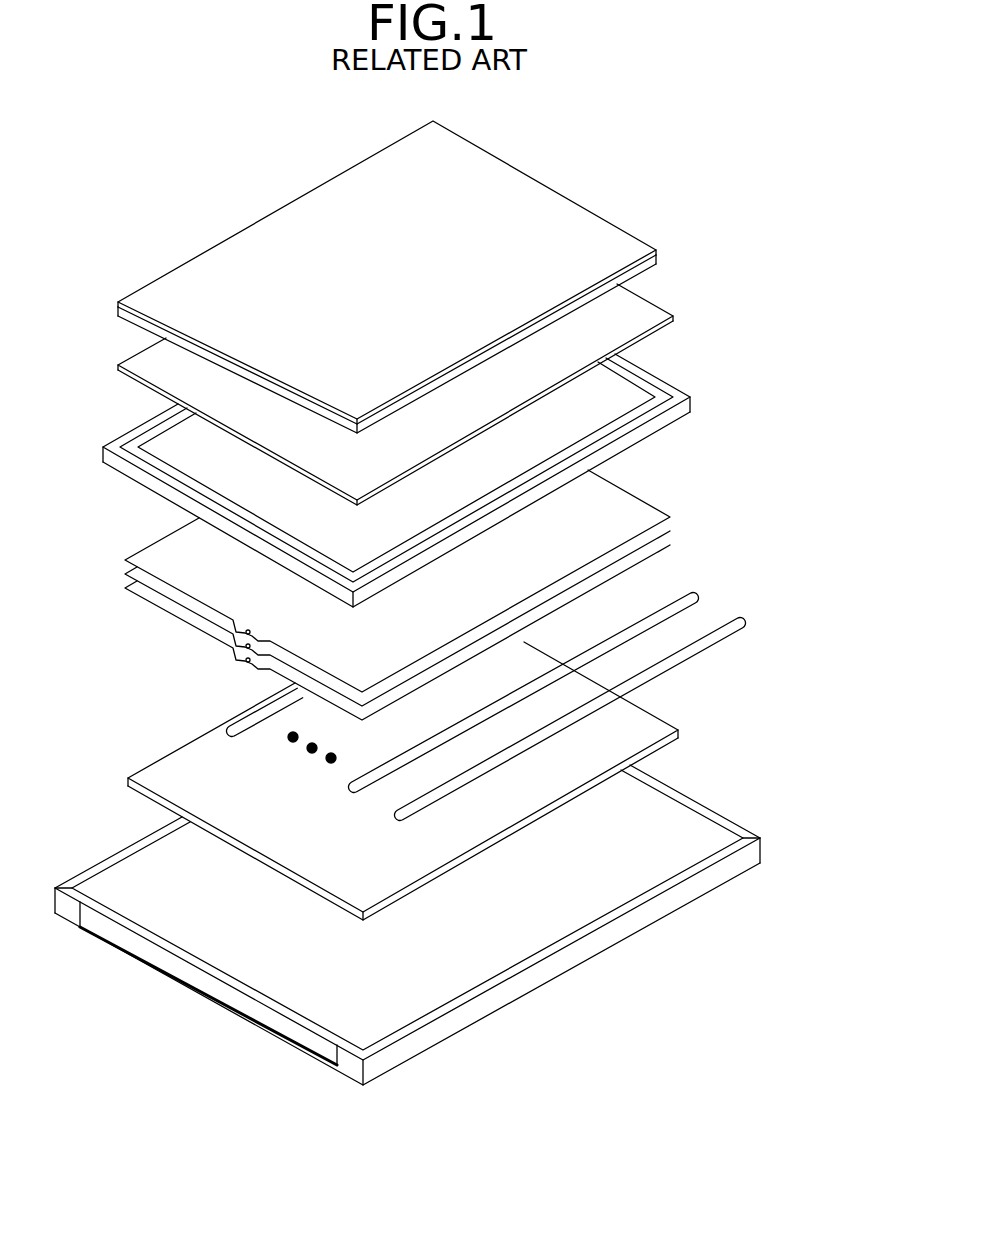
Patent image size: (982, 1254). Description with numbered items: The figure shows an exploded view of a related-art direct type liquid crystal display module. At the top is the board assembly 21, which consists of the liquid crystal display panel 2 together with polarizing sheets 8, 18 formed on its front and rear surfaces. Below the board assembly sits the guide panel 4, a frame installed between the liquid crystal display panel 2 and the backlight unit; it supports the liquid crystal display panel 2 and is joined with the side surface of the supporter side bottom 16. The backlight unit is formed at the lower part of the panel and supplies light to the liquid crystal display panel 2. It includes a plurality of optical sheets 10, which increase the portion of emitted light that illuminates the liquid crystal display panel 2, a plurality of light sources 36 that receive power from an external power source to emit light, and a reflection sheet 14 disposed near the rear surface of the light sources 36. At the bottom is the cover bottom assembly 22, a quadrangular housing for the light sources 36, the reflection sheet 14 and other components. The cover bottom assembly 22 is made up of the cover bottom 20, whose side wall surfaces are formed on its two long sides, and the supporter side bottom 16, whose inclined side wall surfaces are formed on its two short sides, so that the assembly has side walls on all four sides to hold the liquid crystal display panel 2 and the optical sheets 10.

The liquid crystal display panel 2 is at (658, 256).
The guide panel 4 is at (690, 415).
The polarizing sheet 8 is at (433, 394).
The optical sheets 10 is at (678, 505).
The reflection sheet 14 is at (678, 735).
The supporter side bottom 16 is at (732, 818).
The polarizing sheet 18 is at (632, 243).
The cover bottom 20 is at (422, 961).
The board assembly 21 is at (463, 313).
The cover bottom assembly 22 is at (466, 925).
The light sources 36 is at (745, 622).